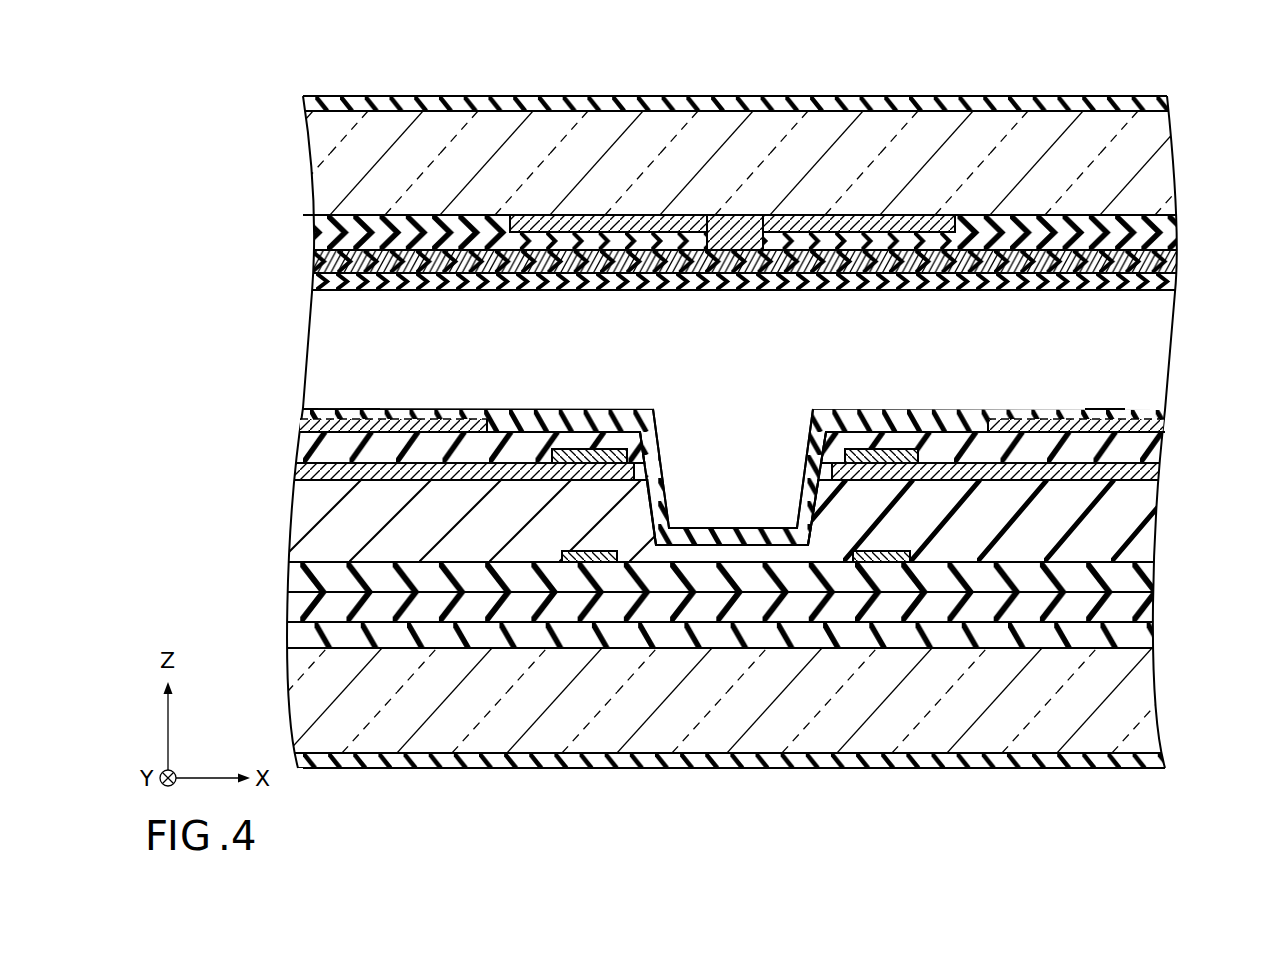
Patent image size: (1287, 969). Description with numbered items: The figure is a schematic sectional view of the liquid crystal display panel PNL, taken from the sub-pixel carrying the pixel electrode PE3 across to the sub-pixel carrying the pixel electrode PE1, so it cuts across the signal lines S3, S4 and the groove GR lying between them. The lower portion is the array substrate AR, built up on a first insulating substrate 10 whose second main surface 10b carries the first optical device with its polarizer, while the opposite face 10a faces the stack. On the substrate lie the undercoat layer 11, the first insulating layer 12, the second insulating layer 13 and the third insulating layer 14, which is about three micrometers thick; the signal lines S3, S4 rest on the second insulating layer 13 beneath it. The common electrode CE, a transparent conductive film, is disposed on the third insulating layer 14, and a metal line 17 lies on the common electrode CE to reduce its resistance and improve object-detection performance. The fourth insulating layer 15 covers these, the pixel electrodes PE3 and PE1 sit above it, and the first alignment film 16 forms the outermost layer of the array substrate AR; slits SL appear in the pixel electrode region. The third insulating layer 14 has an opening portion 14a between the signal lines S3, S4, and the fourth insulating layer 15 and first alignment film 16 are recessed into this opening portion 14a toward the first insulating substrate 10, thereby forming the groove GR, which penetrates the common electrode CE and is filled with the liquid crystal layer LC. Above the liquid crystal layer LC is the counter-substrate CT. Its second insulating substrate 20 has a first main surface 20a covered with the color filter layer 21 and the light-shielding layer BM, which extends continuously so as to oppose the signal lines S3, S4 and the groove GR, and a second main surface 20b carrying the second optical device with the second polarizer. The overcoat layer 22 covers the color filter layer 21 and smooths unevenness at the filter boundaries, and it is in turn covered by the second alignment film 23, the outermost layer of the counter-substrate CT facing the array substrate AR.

The liquid crystal display panel PNL is at (341, 90).
The counter-substrate CT is at (1197, 140).
The array substrate AR is at (1197, 552).
The liquid crystal layer LC is at (1158, 344).
The light-shielding layer BM is at (741, 232).
The second insulating substrate 20 is at (325, 143).
The first main surface 20a is at (1110, 230).
The second main surface 20b is at (1096, 106).
The color filter layer 21 is at (325, 223).
The overcoat layer 22 is at (320, 257).
The second alignment film 23 is at (316, 283).
The first alignment film 16 is at (325, 411).
The fourth insulating layer 15 is at (310, 446).
The third insulating layer 14 is at (310, 497).
The opening portion 14a is at (817, 490).
The groove GR is at (790, 408).
The metal line 17 is at (592, 455).
The common electrode CE is at (535, 470).
The pixel electrode PE1 is at (1032, 425).
The pixel electrode PE3 is at (452, 420).
The signal line S3 is at (601, 554).
The signal line S4 is at (893, 554).
The slit SL is at (361, 405).
The second insulating layer 13 is at (300, 574).
The first insulating layer 12 is at (300, 604).
The undercoat layer 11 is at (300, 634).
The first insulating substrate 10 is at (300, 693).
The first main surface of first insulating substrate 10a is at (1118, 646).
The second main surface 10b is at (1098, 763).